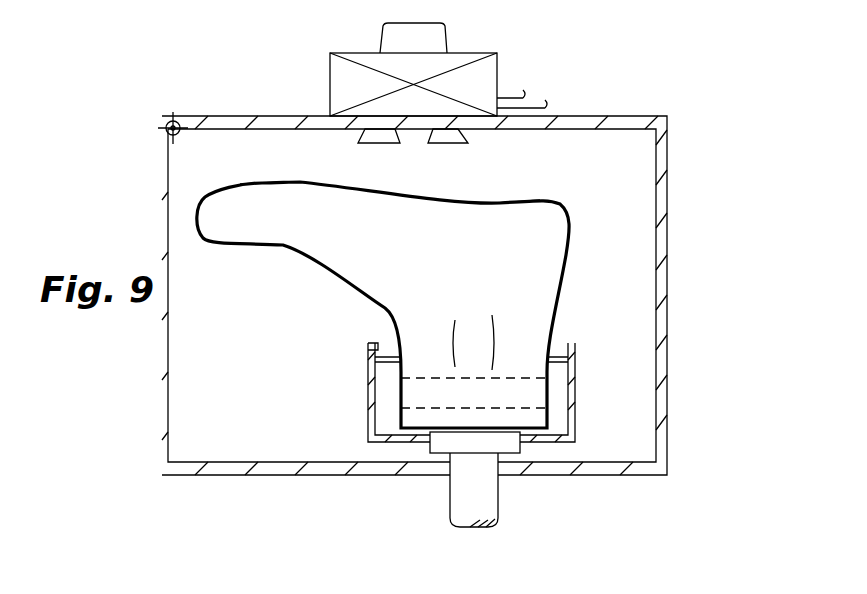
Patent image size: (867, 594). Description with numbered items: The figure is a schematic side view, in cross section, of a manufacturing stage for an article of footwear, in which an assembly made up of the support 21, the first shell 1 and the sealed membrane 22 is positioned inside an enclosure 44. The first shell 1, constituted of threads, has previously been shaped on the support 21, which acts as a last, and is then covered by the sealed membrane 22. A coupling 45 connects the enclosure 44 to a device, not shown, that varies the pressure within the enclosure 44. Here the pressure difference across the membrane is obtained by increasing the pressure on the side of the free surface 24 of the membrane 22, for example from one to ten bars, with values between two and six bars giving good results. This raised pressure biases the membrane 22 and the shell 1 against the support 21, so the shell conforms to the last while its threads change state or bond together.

The first shell 1 is at (573, 200).
The support 21 is at (535, 325).
The sealed membrane 22 is at (527, 200).
The free surface of the membrane 24 is at (262, 183).
The enclosure 44 is at (666, 222).
The coupling 45 is at (470, 53).